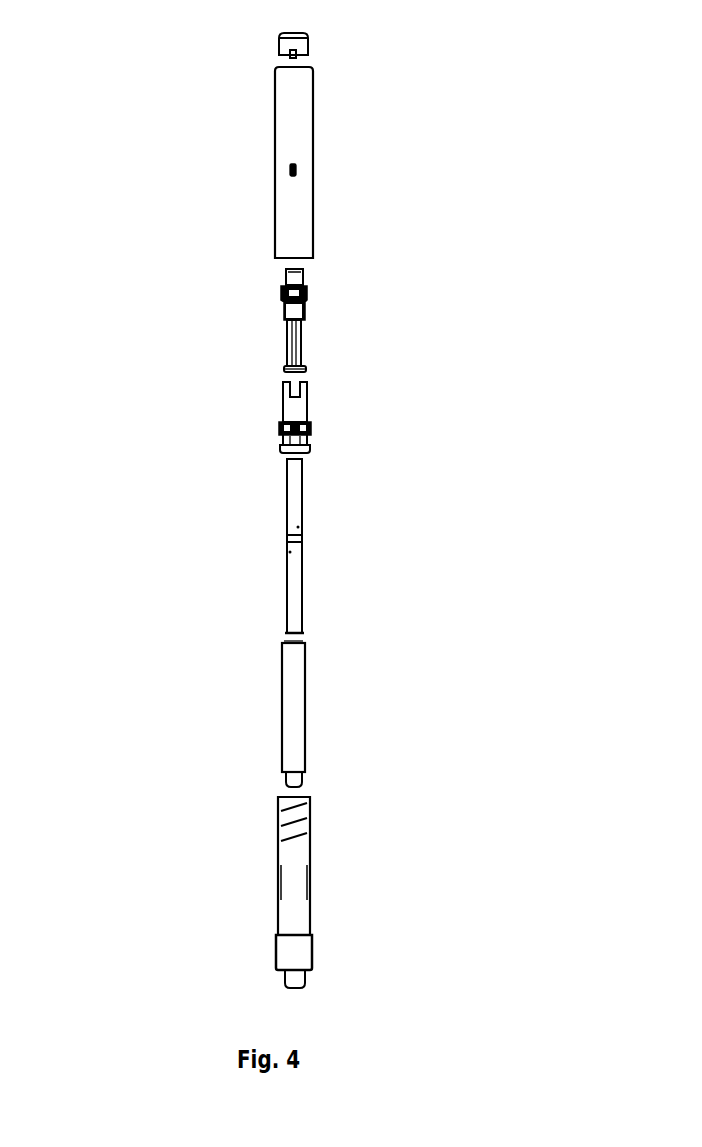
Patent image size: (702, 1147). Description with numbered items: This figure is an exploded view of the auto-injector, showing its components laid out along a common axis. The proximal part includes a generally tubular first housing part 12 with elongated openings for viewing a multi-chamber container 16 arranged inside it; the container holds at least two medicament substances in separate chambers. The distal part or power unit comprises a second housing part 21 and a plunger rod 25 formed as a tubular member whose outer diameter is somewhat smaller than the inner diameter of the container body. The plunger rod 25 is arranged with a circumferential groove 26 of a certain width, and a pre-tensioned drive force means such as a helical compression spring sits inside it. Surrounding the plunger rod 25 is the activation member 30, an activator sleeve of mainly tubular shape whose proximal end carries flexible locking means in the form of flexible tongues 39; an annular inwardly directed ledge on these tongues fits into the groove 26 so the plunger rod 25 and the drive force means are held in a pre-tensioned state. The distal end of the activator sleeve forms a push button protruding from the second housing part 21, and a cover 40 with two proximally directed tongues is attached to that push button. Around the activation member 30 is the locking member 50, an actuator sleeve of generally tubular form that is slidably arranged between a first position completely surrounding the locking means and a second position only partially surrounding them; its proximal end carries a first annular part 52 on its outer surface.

The first housing part 12 is at (299, 882).
The multi-chamber container 16 is at (295, 710).
The second housing part 21 is at (302, 141).
The plunger rod 25 is at (296, 577).
The circumferential groove 26 is at (288, 540).
The activation member 30 is at (254, 325).
The flexible tongues 39 is at (303, 360).
The cover 40 is at (308, 45).
The locking member 50 is at (254, 417).
The first annular part 52 is at (305, 447).